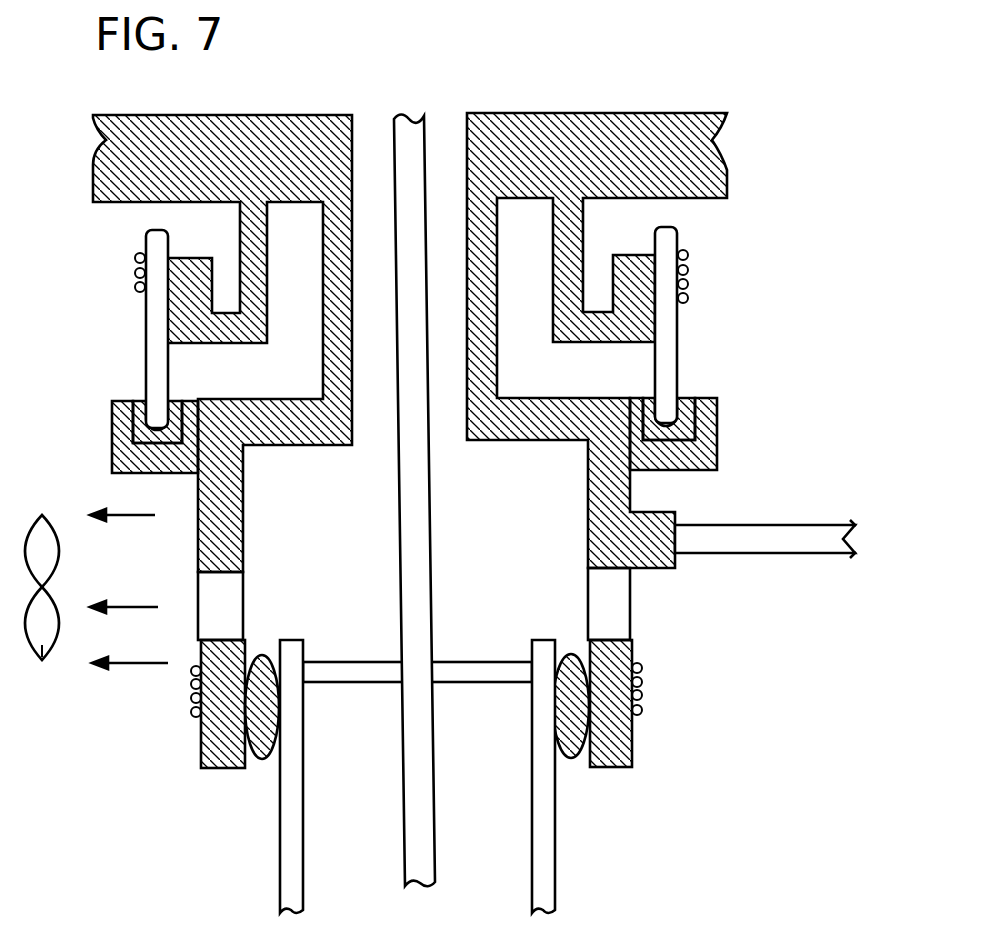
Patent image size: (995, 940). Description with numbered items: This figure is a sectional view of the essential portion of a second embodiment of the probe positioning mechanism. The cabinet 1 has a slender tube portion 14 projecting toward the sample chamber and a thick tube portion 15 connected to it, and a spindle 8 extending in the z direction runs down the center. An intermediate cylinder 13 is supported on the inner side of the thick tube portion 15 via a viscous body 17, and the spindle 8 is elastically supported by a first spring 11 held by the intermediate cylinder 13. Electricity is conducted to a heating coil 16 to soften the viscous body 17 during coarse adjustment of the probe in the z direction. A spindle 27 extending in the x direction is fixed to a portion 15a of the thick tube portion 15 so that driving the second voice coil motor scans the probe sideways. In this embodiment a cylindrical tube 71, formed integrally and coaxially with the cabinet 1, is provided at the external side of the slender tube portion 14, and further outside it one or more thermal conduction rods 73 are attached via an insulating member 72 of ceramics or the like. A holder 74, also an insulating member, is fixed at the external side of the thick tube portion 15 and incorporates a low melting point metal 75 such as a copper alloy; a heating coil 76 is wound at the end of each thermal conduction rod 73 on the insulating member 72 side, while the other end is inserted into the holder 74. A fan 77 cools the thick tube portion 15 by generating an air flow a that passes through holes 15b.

The cabinet 1 is at (673, 122).
The spindle 8 is at (416, 136).
The first spring 11 is at (353, 675).
The intermediate cylinder 13 is at (545, 855).
The slender tube portion 14 is at (326, 245).
The thick tube portion 15 is at (230, 508).
The portion of the thick tube portion 15a is at (652, 560).
The holes 15b is at (230, 607).
The heating coil 16 is at (197, 722).
The viscous body 17 is at (262, 760).
The spindle 27 is at (765, 530).
The cylindrical tube 71 is at (584, 234).
The insulating member 72 is at (617, 332).
The thermal conduction rod 73 is at (673, 345).
The holder 74 is at (717, 453).
The low melting point metal 75 is at (685, 407).
The heating coil 76 is at (690, 270).
The fan 77 is at (42, 660).
The air flow a is at (118, 605).